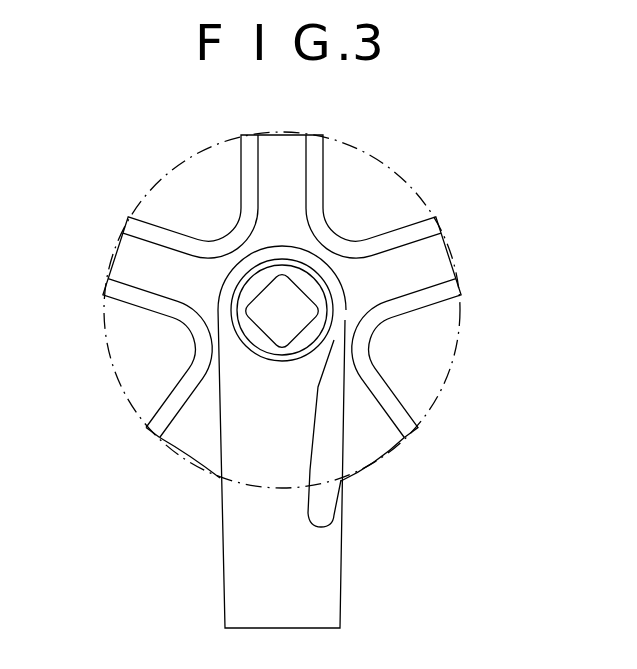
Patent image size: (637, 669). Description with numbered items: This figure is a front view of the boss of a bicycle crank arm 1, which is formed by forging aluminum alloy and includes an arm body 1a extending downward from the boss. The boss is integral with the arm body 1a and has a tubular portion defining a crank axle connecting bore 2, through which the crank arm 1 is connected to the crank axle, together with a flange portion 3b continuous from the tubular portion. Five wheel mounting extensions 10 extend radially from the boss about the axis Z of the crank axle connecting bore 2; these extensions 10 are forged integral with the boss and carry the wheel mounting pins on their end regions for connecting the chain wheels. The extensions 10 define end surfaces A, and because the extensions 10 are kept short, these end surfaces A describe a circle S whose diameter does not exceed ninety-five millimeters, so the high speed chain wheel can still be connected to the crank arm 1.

The bicycle crank arm 1 is at (225, 531).
The arm body 1a is at (328, 578).
The crank axle connecting bore 2 is at (274, 292).
The flange portion 3b is at (200, 257).
The wheel mounting extensions 10 is at (280, 143).
The end surfaces A is at (115, 233).
The circle S is at (393, 171).
The axis Z is at (282, 302).